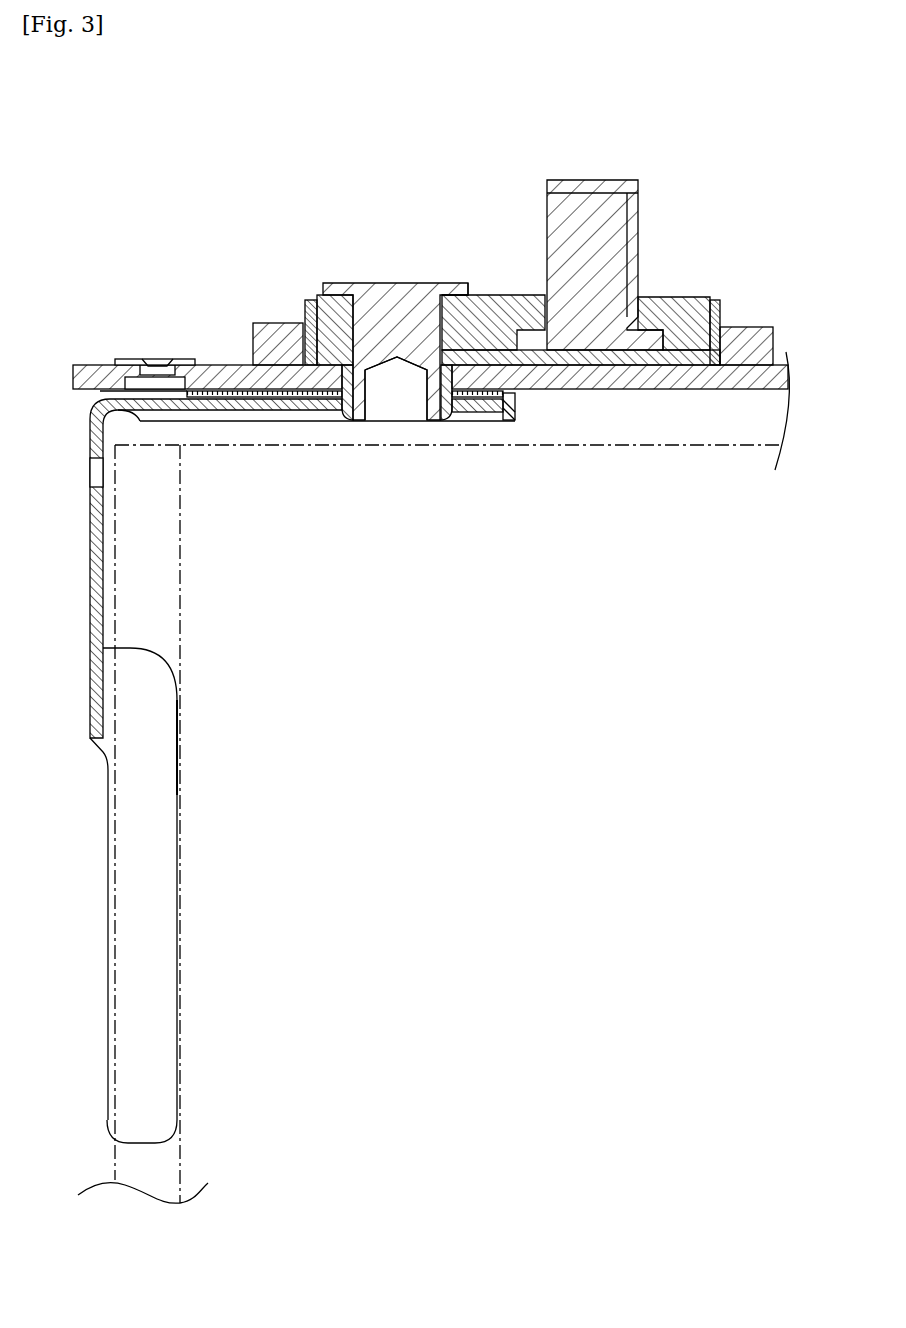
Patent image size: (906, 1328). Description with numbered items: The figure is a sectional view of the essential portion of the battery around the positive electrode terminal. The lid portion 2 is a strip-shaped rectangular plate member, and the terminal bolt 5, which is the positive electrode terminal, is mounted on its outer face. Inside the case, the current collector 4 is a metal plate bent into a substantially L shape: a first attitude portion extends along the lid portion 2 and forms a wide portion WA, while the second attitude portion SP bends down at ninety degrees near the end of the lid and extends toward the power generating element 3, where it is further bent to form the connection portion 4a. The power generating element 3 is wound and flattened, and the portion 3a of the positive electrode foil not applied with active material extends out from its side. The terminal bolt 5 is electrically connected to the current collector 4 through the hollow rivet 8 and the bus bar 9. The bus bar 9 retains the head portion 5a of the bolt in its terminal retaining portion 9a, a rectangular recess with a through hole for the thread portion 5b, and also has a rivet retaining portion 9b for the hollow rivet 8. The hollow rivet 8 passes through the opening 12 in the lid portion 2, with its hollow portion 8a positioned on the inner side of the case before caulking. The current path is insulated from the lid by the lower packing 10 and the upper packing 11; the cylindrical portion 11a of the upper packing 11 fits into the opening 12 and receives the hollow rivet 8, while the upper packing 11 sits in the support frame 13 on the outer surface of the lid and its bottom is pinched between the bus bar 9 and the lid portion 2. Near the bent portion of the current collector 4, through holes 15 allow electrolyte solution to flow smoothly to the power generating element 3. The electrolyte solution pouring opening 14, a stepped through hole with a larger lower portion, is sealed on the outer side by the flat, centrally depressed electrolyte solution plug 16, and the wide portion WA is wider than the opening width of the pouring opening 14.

The lid portion 2 is at (605, 390).
The power generating element 3 is at (718, 443).
The portion of the foil-shaped positive electrode plate not applied with the active 3a is at (167, 557).
The current collector 4 is at (205, 863).
The connection portion 4a is at (177, 792).
The terminal bolt 5 is at (652, 195).
The head portion 5a is at (640, 340).
The thread portion 5b is at (640, 247).
The hollow rivet 8 is at (368, 283).
The hollow portion 8a is at (390, 398).
The bus bar 9 is at (475, 305).
The terminal retaining portion 9a is at (656, 287).
The rivet retaining portion 9b is at (480, 287).
The lower packing 10 is at (517, 400).
The upper packing 11 is at (717, 302).
The cylindrical portion 11a is at (293, 397).
The opening 12 is at (434, 387).
The support frame 13 is at (273, 323).
The electrolyte solution pouring opening 14 is at (172, 372).
The through holes 15 is at (97, 475).
The electrolyte solution plug 16 is at (125, 360).
The wide portion WA is at (240, 410).
The second attitude portion SP is at (103, 562).